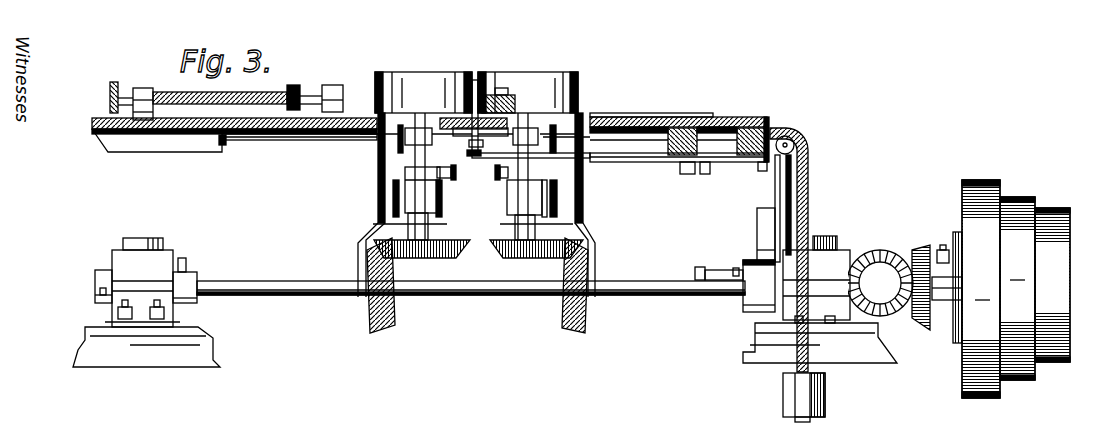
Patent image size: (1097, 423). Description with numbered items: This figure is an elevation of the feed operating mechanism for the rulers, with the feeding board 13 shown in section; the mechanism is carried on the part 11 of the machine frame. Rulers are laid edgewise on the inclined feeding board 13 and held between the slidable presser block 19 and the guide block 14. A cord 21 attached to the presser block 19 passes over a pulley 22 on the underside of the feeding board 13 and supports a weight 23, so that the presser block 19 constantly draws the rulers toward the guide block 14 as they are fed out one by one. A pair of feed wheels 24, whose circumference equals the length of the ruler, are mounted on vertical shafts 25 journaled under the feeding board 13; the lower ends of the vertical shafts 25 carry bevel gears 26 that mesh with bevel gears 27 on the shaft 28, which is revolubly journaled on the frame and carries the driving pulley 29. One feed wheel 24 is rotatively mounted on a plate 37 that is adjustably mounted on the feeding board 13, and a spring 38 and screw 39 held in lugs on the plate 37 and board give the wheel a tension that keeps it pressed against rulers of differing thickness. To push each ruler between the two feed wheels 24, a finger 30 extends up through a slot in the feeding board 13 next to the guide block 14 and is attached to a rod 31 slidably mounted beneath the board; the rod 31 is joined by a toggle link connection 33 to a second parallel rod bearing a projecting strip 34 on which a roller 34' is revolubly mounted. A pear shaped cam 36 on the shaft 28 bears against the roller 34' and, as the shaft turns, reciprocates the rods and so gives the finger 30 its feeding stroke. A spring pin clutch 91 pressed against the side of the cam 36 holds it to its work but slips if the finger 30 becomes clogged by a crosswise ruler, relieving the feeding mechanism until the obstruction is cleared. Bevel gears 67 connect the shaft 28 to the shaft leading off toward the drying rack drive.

The frame part 11 is at (165, 362).
The feeding board 13 is at (94, 131).
The guide block 14 is at (517, 93).
The presser block 19 is at (220, 145).
The cord 21 is at (265, 141).
The pulley 22 is at (808, 131).
The weight 23 is at (830, 403).
The feed wheels 24 is at (428, 74).
The vertical shafts 25 is at (414, 158).
The bevel gears 26 is at (448, 243).
The bevel gears 27 is at (388, 329).
The shaft 28 is at (488, 297).
The driving pulley 29 is at (1026, 384).
The finger 30 is at (488, 74).
The rod 31 is at (457, 108).
The toggle link connection 33 is at (617, 163).
The projecting strip 34 is at (753, 208).
The roller 34' is at (738, 275).
The cam 36 is at (757, 223).
The plate 37 is at (175, 134).
The spring 38 is at (163, 92).
The screw 39 is at (109, 90).
The bevel gears 67 is at (912, 252).
The spring pin clutch 91 is at (748, 287).